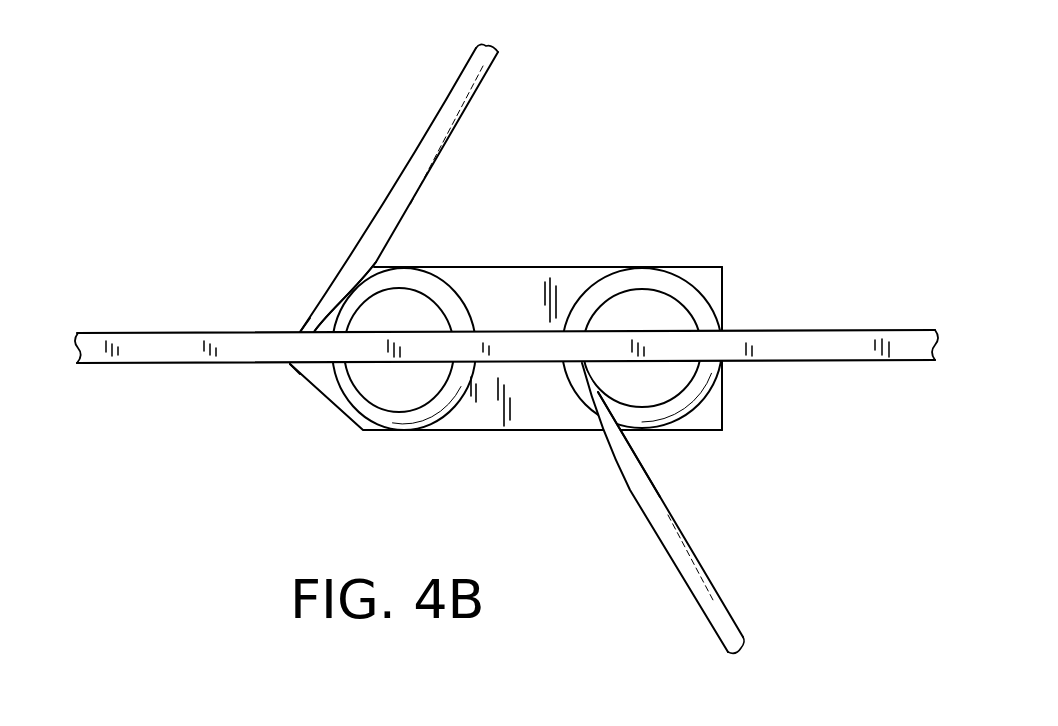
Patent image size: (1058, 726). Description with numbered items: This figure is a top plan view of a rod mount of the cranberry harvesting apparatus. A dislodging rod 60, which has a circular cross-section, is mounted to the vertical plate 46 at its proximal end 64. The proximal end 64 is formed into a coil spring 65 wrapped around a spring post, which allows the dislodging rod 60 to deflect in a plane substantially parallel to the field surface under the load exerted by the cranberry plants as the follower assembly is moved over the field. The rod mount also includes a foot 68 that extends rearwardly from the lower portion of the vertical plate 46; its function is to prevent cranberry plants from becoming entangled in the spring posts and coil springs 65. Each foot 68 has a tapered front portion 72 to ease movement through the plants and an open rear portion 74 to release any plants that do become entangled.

The vertical plate 46 is at (802, 342).
The dislodging rod 60 is at (435, 137).
The proximal end 64 is at (358, 270).
The coil spring 65 is at (352, 402).
The foot 68 is at (510, 293).
The tapered front portion 72 is at (307, 320).
The open rear portion 74 is at (723, 288).